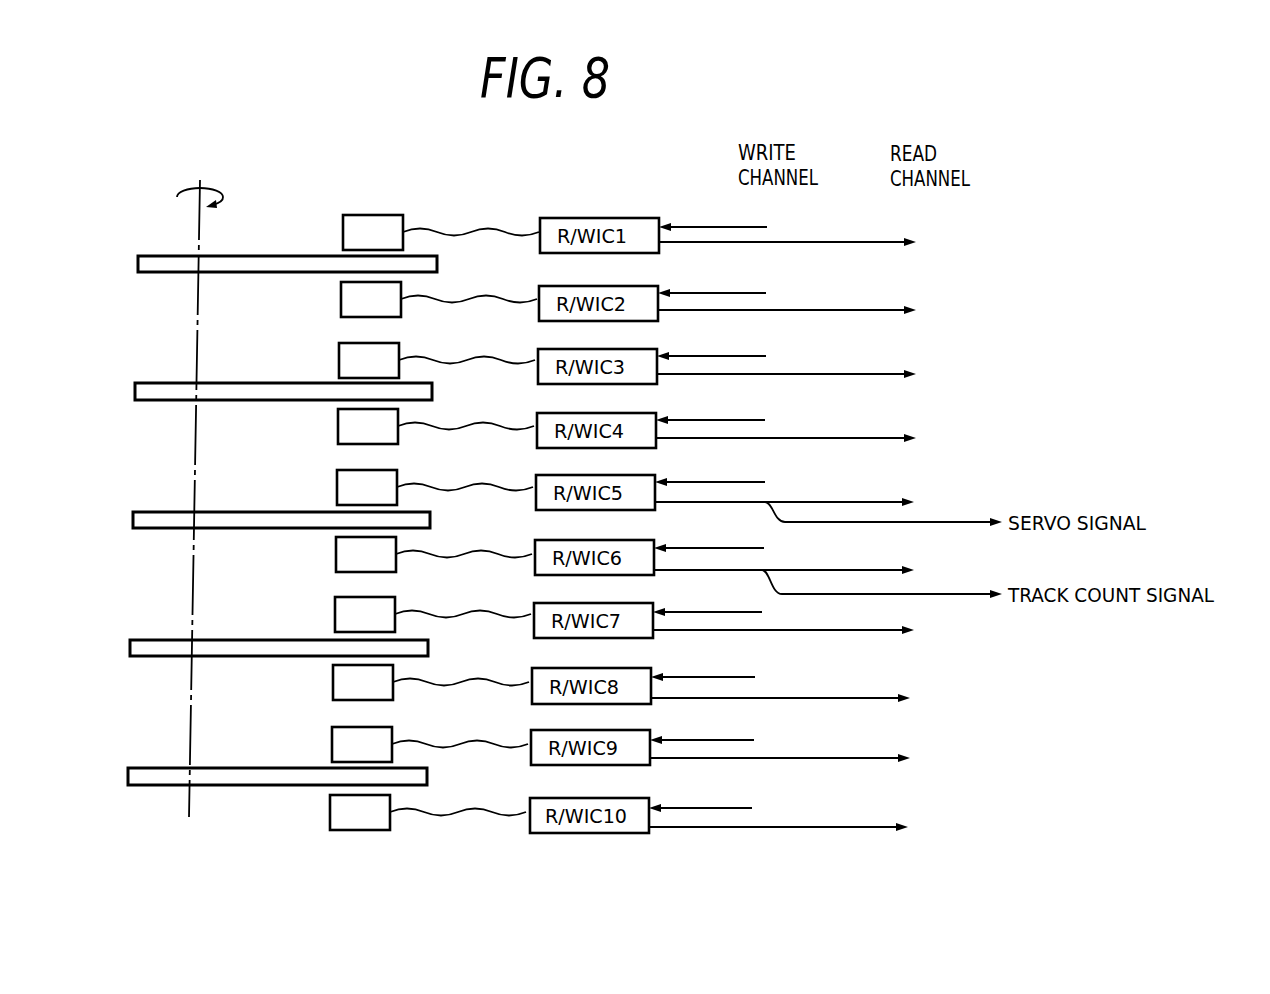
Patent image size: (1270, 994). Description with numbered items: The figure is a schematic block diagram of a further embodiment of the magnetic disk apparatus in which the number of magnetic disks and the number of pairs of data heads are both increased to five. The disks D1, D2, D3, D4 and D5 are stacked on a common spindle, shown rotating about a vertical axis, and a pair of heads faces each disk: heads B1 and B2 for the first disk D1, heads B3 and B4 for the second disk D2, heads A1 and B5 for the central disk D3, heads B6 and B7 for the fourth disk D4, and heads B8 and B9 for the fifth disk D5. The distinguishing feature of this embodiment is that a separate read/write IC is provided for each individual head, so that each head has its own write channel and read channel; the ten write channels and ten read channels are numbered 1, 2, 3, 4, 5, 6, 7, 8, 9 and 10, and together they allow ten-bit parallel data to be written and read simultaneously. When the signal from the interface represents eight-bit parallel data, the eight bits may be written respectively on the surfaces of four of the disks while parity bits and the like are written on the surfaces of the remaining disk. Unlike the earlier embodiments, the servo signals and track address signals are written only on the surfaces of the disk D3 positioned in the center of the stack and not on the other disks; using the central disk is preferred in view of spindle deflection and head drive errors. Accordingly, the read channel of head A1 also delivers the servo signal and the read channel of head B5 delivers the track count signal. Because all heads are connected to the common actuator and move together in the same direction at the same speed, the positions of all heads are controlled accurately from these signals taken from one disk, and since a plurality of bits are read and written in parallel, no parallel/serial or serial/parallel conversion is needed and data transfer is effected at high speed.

The magnetic disk D1 is at (233, 256).
The magnetic disk D2 is at (232, 383).
The magnetic disk D3 is at (228, 512).
The magnetic disk D4 is at (226, 640).
The magnetic disk D5 is at (224, 768).
The data head B1 is at (343, 222).
The data head B2 is at (341, 292).
The data head B3 is at (339, 355).
The data head B4 is at (338, 421).
The data head A1 is at (337, 483).
The data head B5 is at (336, 549).
The data head B6 is at (335, 609).
The data head B7 is at (333, 677).
The data head B8 is at (332, 739).
The data head B9 is at (330, 807).
The read/write channel 1 is at (797, 235).
The read/write channel 2 is at (797, 302).
The read/write channel 3 is at (796, 366).
The read/write channel 4 is at (795, 430).
The read/write channel 5 is at (828, 497).
The read/write channel 6 is at (828, 566).
The read/write channel 7 is at (792, 622).
The read/write channel 8 is at (790, 688).
The read/write channel 9 is at (790, 750).
The read/write channel 10 is at (797, 818).